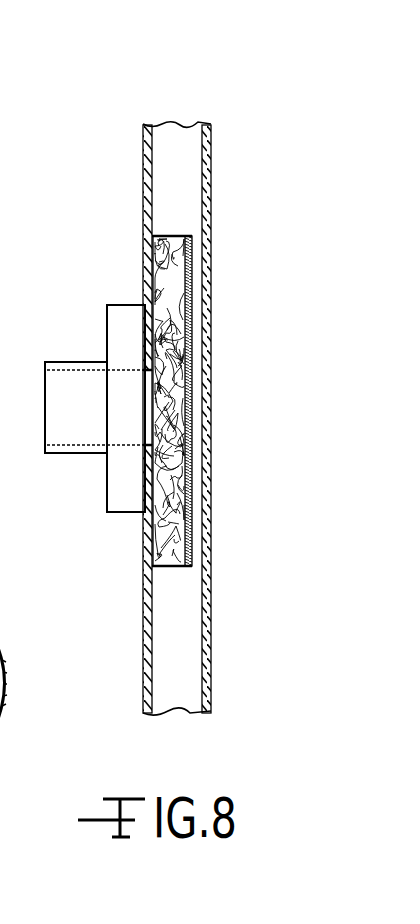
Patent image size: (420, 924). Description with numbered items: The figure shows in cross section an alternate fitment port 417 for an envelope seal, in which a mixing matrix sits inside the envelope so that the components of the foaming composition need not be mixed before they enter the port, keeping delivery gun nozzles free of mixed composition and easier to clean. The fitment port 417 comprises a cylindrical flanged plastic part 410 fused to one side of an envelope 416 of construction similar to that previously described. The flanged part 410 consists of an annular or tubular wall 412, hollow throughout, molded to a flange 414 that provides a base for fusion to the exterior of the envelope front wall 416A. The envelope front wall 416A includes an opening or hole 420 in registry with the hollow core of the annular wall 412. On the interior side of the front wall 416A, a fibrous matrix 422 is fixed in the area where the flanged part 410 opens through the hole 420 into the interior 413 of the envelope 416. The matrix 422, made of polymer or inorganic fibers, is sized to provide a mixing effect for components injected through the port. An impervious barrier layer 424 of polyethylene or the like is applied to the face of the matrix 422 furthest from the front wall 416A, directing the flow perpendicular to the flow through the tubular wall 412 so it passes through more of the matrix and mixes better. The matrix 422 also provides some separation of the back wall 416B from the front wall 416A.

The cylindrical flanged plastic part 410 is at (80, 362).
The annular wall 412 is at (67, 447).
The interior of the envelope 413 is at (178, 165).
The flange 414 is at (123, 503).
The envelope 416 is at (222, 650).
The envelope front wall 416A is at (143, 210).
The envelope back wall 416B is at (211, 212).
The fitment port 417 is at (77, 268).
The opening 420 is at (141, 393).
The fibrous matrix 422 is at (167, 570).
The impervious barrier layer 424 is at (190, 330).